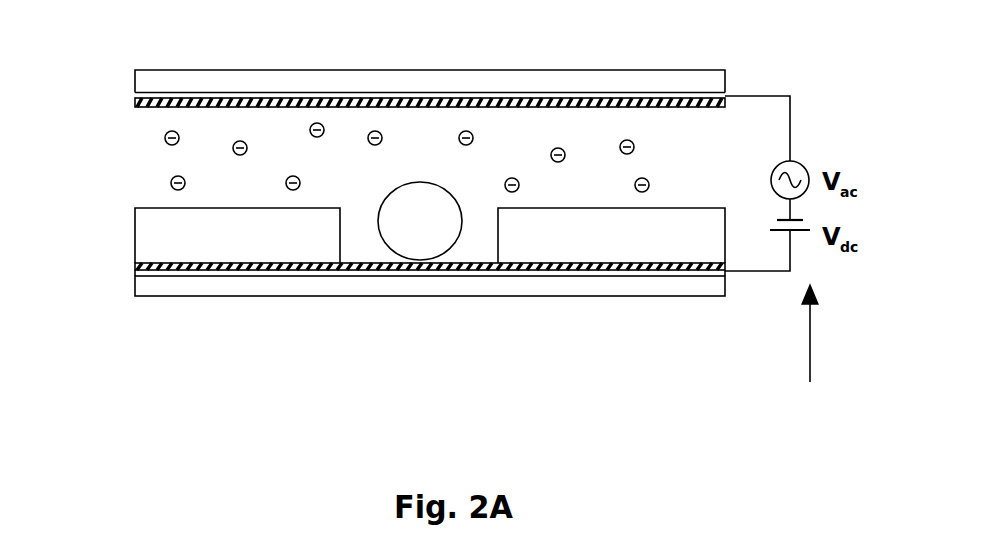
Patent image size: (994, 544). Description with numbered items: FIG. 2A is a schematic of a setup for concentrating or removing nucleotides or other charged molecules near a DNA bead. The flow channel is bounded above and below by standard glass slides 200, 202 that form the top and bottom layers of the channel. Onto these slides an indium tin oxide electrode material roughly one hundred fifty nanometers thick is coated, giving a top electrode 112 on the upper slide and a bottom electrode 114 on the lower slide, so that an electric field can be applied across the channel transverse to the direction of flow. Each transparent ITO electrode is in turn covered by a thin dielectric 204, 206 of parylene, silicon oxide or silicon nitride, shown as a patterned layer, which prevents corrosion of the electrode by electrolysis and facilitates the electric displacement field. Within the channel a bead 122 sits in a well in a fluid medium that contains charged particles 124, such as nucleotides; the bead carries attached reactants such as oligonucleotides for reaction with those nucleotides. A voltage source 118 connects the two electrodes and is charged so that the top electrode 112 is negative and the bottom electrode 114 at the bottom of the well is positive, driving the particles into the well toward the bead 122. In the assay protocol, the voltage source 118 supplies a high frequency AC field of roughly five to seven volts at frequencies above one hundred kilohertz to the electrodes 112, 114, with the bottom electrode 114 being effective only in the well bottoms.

The glass slide 200 is at (358, 70).
The top electrode 112 is at (140, 97).
The dielectric layer 204 is at (150, 105).
The charged particles 124 is at (473, 128).
The bead 122 is at (447, 248).
The bottom electrode 114 is at (320, 271).
The dielectric layer 206 is at (600, 267).
The glass slide 202 is at (395, 287).
The voltage source 118 is at (812, 351).